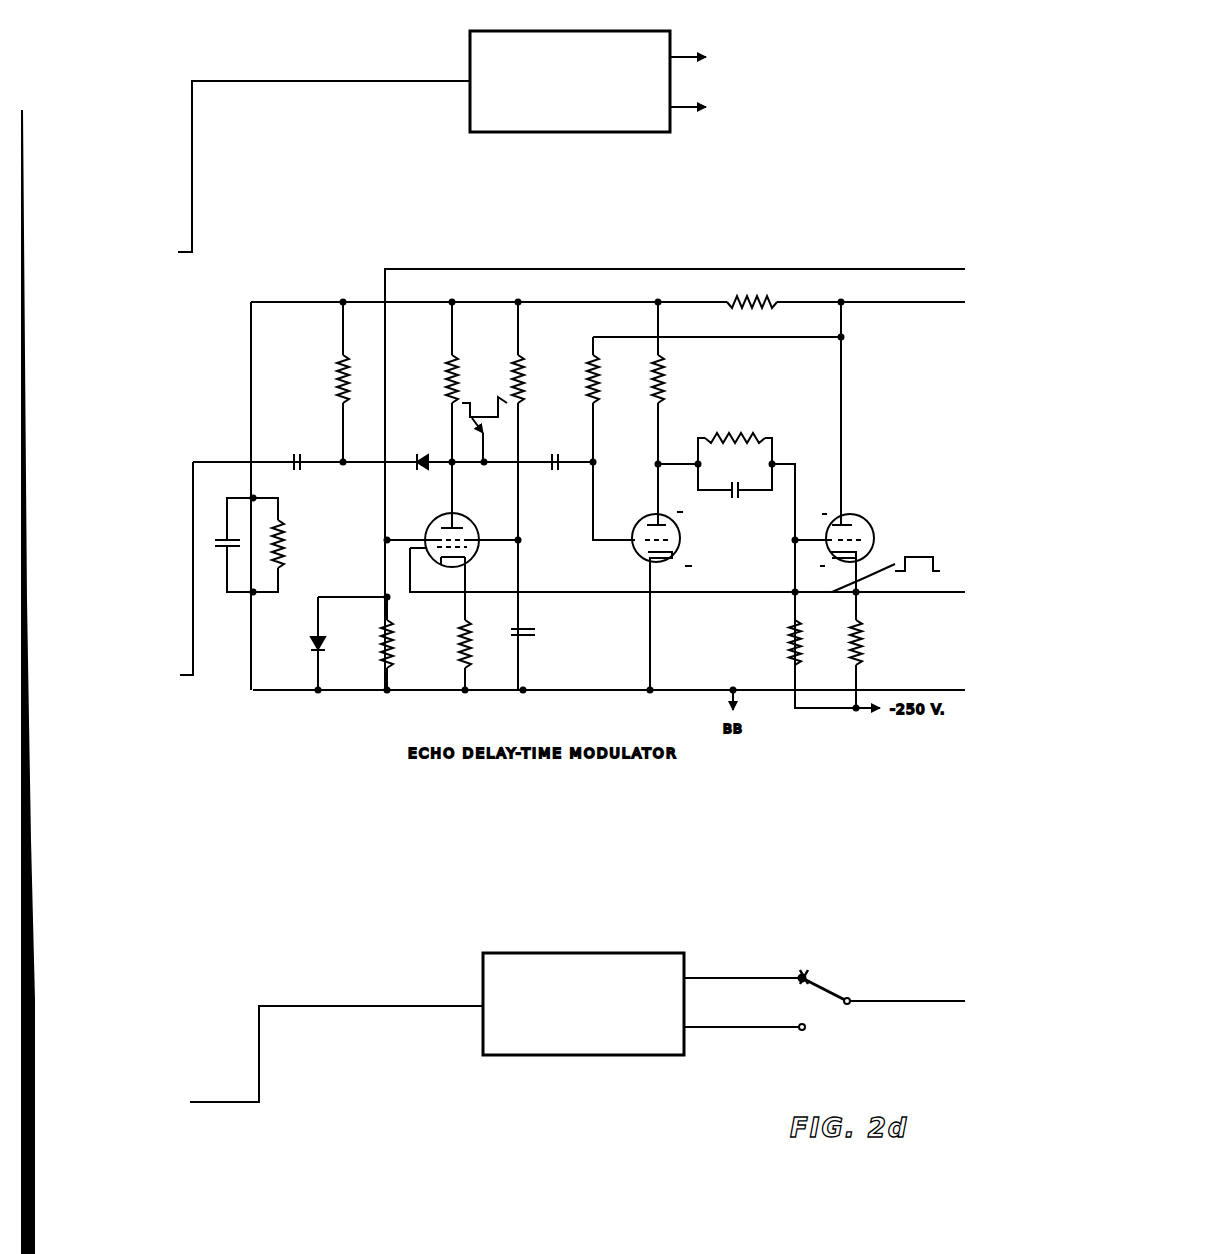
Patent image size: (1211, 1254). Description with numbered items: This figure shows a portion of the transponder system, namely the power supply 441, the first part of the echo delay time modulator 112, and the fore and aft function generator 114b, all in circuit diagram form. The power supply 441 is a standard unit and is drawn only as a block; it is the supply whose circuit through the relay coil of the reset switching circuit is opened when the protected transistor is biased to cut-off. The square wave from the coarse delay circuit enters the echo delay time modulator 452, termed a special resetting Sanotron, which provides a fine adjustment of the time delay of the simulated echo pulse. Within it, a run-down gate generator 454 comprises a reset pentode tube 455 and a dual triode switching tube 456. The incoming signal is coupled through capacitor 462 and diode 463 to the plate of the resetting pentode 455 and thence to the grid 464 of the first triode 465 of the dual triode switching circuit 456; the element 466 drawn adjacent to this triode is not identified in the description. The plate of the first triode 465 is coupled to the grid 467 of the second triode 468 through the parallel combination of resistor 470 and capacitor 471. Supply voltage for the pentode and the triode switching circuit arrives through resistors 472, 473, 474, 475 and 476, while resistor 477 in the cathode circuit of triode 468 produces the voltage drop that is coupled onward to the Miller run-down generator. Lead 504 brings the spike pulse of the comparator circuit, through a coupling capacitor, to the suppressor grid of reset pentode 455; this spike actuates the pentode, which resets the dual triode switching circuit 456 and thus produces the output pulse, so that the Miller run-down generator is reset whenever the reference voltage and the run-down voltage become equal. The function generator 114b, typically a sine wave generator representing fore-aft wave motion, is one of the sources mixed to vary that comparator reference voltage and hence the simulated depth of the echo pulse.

The power supply 441 is at (613, 31).
The lead 504 is at (822, 269).
The echo delay time modulator 452 is at (243, 457).
The capacitor 462 is at (292, 457).
The diode 463 is at (418, 455).
The grid 464 is at (551, 457).
The reset pentode tube 455 is at (463, 523).
The first triode 465 is at (636, 522).
The grid lead 466 is at (613, 549).
The grid 467 is at (810, 524).
The second triode 468 is at (866, 514).
The resistor 470 is at (730, 434).
The capacitor 471 is at (740, 494).
The resistor 472 is at (338, 391).
The resistor 473 is at (456, 392).
The resistor 474 is at (522, 392).
The resistor 475 is at (625, 375).
The resistor 476 is at (663, 388).
The resistor 477 is at (859, 655).
The dual triode switching circuit 456 is at (728, 539).
The run-down gate generator 454 is at (592, 695).
The echo delay time modulator 112 is at (362, 700).
The function generator 114b is at (640, 951).